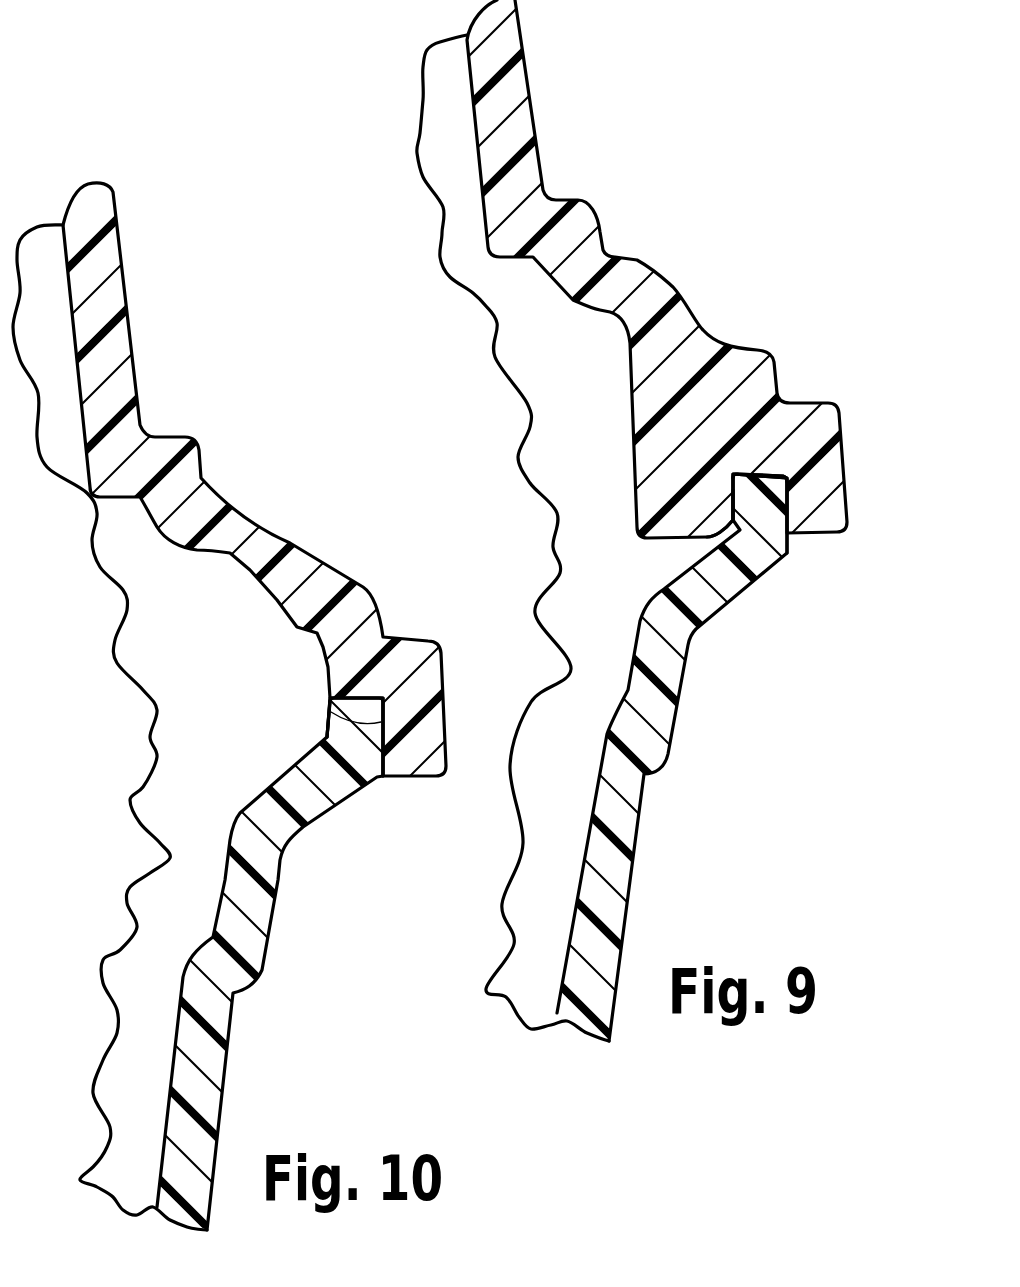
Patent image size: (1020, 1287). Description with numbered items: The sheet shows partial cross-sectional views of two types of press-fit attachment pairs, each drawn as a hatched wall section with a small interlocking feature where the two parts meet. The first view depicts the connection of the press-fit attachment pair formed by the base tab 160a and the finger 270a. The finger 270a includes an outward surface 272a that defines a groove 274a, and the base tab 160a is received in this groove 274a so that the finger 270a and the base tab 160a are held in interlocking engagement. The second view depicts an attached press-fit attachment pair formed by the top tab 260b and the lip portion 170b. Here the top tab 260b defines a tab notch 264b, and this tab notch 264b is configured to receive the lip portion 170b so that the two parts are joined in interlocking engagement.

In FIG. 10, the top tab 260b is at (378, 776).
In FIG. 10, the tab notch 264b is at (330, 704).
In FIG. 10, the lip portion 170b is at (325, 730).
In FIG. 9, the finger 270a is at (843, 450).
In FIG. 9, the outward surface 272a is at (777, 560).
In FIG. 9, the groove 274a is at (747, 478).
In FIG. 9, the base tab 160a is at (728, 490).